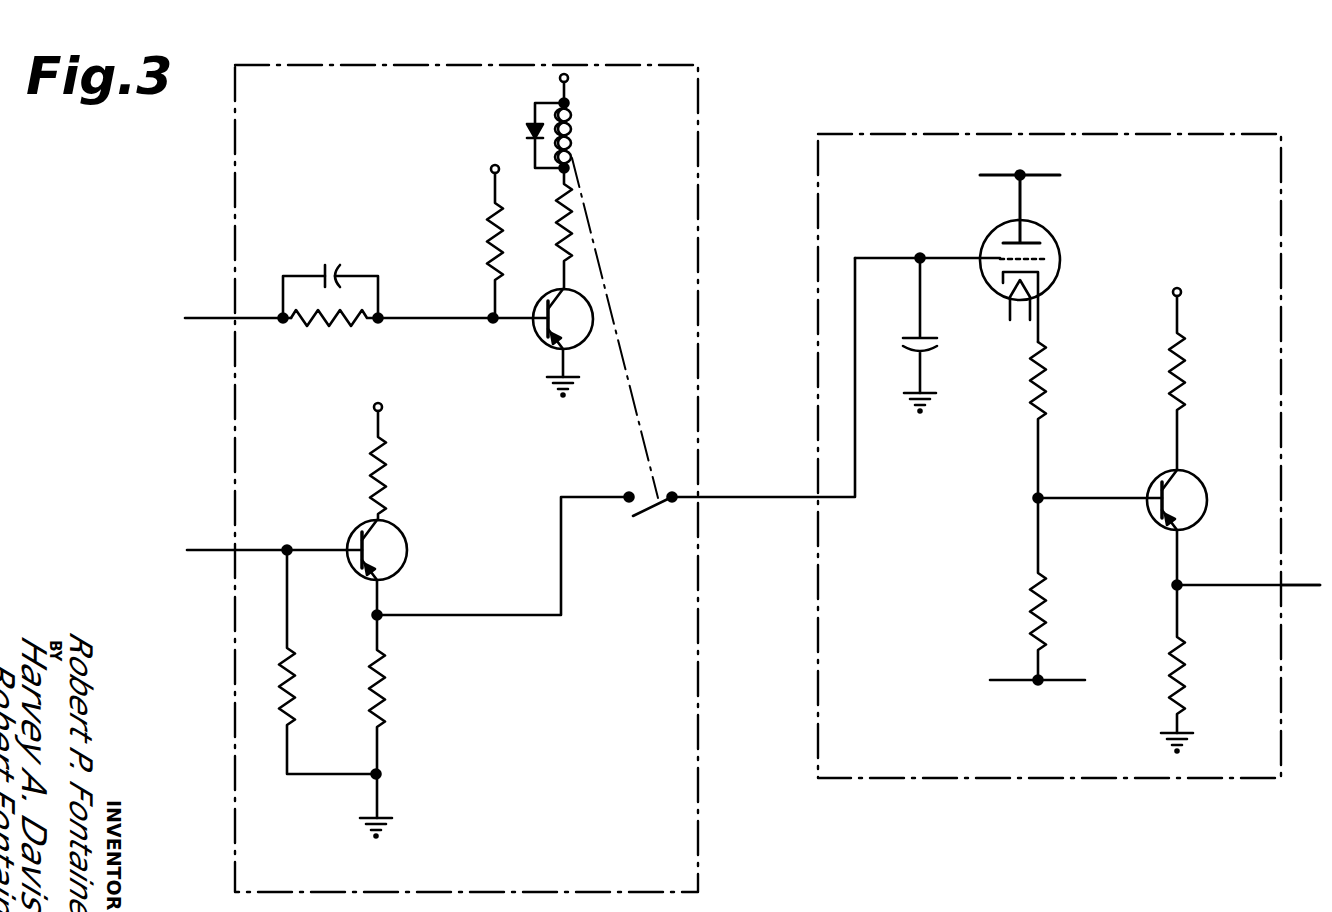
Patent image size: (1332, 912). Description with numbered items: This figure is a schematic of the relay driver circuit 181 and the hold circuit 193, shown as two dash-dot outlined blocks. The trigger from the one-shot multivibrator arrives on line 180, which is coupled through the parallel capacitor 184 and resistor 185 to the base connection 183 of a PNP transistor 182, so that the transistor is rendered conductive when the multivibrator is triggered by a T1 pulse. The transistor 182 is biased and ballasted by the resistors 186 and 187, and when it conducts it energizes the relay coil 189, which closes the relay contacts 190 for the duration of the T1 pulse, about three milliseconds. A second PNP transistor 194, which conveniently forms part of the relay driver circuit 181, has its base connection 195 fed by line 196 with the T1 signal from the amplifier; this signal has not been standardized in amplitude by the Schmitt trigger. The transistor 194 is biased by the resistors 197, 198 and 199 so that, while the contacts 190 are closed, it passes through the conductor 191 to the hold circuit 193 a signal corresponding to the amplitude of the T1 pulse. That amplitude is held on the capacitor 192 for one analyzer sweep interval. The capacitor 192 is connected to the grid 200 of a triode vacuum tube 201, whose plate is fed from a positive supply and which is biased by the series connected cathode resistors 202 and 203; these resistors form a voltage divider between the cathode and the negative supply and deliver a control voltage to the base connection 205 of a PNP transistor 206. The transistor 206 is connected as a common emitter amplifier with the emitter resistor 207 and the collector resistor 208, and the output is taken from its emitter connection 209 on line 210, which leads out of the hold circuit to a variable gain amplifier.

The line 180 is at (218, 318).
The relay driver circuit 181 is at (235, 210).
The PNP transistor 182 is at (540, 304).
The base connection 183 is at (510, 322).
The capacitor 184 is at (336, 274).
The resistor 185 is at (318, 326).
The resistor 186 is at (490, 240).
The resistor 187 is at (560, 204).
The relay coil 189 is at (575, 135).
The relay contacts 190 is at (634, 518).
The conductor 191 is at (786, 497).
The capacitor 192 is at (903, 339).
The hold circuit 193 is at (818, 212).
The PNP transistor 194 is at (409, 540).
The base connection 195 is at (336, 549).
The line 196 is at (201, 548).
The resistor 197 is at (293, 661).
The resistor 198 is at (386, 692).
The resistor 199 is at (386, 480).
The grid 200 is at (1048, 262).
The triode vacuum tube 201 is at (1047, 243).
The cathode resistor 202 is at (1045, 370).
The cathode resistor 203 is at (1044, 606).
The base connection 205 is at (1124, 497).
The PNP transistor 206 is at (1205, 489).
The emitter resistor 207 is at (1186, 373).
The collector resistor 208 is at (1185, 692).
The emitter connection 209 is at (1185, 585).
The line 210 is at (1302, 590).